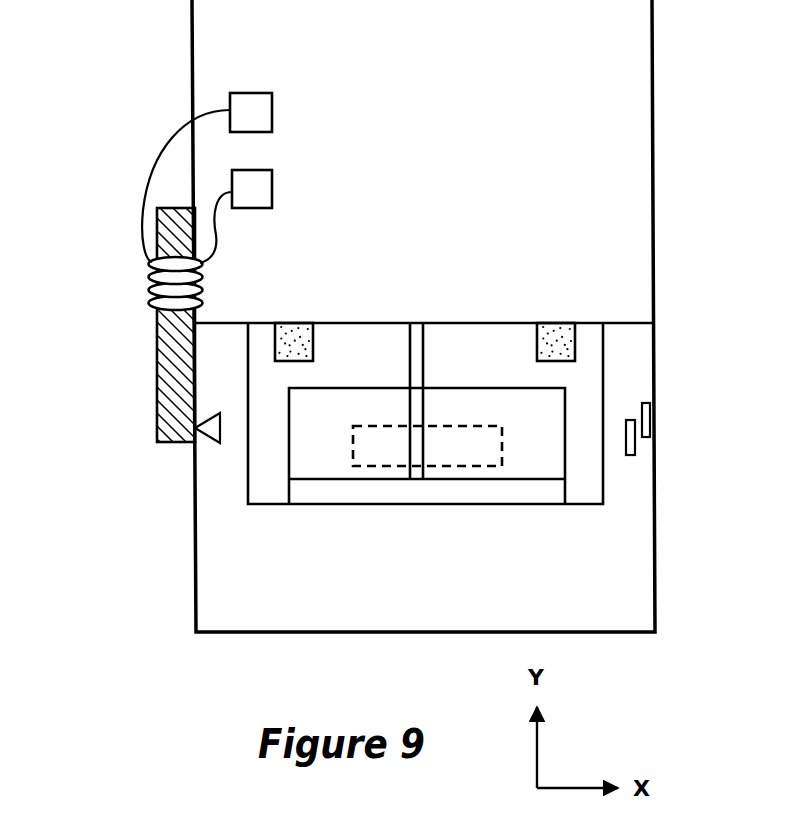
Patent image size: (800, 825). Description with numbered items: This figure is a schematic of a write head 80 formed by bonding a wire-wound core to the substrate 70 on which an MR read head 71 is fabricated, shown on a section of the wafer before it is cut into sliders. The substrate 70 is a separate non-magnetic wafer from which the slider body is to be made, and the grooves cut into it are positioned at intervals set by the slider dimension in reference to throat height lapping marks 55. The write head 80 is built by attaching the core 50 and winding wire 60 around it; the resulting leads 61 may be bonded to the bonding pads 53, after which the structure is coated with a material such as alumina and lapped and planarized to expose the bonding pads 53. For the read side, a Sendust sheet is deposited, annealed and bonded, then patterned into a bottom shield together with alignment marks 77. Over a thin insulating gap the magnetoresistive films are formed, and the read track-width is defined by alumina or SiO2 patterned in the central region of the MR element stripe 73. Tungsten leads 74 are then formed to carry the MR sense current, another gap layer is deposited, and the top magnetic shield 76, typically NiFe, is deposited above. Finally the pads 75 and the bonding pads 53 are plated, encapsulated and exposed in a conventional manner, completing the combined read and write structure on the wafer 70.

The core 50 is at (160, 397).
The bonding pads 53 is at (272, 118).
The throat height lapping marks 55 is at (212, 442).
The wire 60 is at (148, 278).
The leads 61 is at (217, 202).
The substrate 70 is at (225, 565).
The MR read head 71 is at (343, 530).
The MR element stripe 73 is at (458, 453).
The tungsten leads 74 is at (453, 342).
The pads 75 is at (555, 333).
The top magnetic shield 76 is at (566, 452).
The alignment marks 77 is at (630, 420).
The write head 80 is at (70, 202).